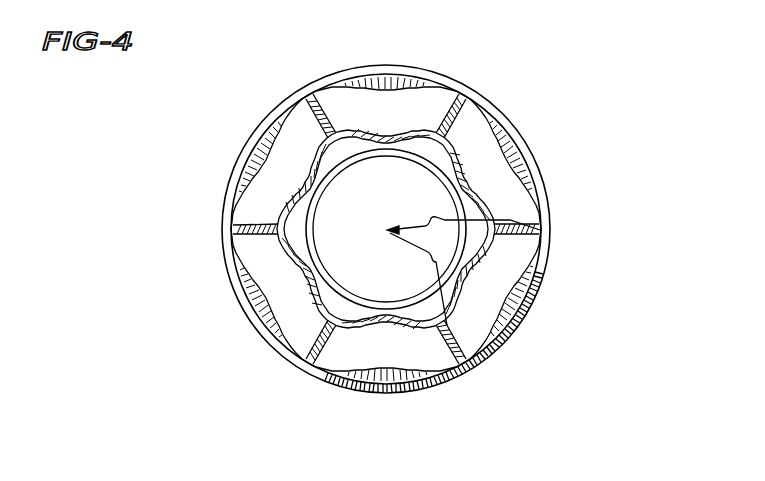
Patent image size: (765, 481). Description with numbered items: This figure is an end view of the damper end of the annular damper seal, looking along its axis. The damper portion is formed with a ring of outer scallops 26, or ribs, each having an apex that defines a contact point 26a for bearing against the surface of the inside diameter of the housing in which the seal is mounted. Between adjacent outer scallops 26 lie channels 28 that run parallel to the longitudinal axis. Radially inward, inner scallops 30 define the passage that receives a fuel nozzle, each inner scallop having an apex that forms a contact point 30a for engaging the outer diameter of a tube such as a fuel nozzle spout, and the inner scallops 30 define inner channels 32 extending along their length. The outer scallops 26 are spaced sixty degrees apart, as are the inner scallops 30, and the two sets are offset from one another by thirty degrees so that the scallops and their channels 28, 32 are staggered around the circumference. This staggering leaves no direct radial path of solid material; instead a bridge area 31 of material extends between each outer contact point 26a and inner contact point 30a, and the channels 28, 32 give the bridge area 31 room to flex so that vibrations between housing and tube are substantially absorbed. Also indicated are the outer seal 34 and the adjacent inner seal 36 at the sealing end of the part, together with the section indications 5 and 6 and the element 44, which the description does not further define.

The outer scallops 26 is at (512, 100).
The contact point 26a is at (233, 235).
The channels 28 is at (362, 75).
The inner scallops 30 is at (403, 130).
The contact point 30a is at (440, 271).
The bridge area 31 is at (290, 140).
The inner channels 32 is at (460, 167).
The outer seal 34 is at (473, 120).
The inner seal 36 is at (424, 172).
The element 44 is at (464, 474).
The section line 5- 5 is at (403, 220).
The section line 6- 6 is at (370, 205).